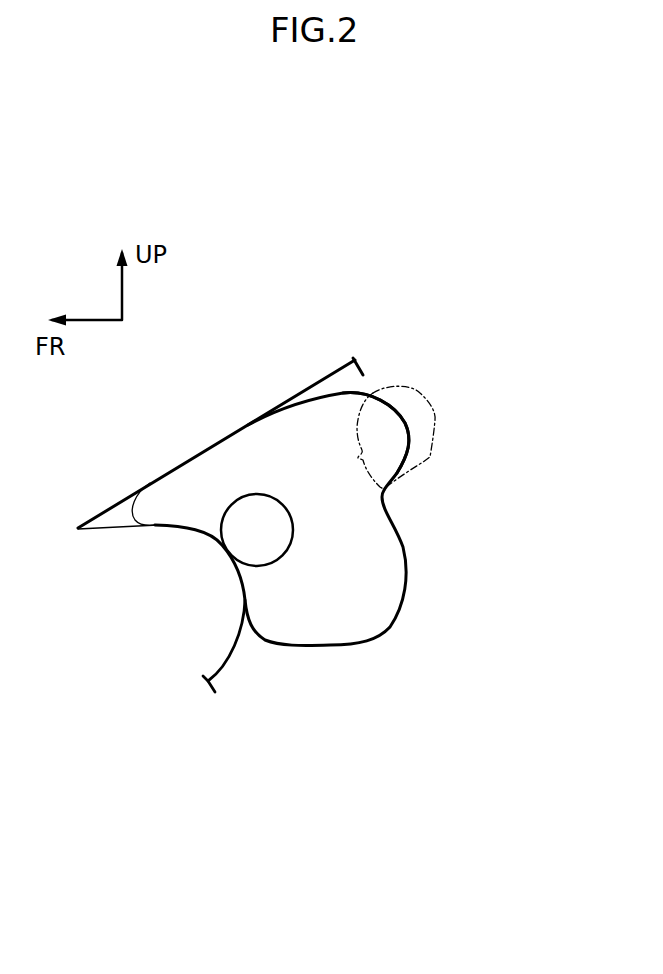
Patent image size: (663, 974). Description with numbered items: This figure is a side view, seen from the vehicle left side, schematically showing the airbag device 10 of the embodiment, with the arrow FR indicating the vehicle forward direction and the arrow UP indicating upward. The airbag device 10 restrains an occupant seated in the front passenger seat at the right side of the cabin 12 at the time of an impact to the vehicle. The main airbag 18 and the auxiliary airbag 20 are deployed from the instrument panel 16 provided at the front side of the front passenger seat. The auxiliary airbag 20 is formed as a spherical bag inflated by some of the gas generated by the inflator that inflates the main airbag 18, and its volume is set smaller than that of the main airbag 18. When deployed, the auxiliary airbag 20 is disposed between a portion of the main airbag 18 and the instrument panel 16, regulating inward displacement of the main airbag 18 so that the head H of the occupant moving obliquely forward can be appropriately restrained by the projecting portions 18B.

The airbag device 10 is at (298, 730).
The cabin 12 is at (503, 603).
The instrument panel 16 is at (233, 655).
The main airbag 18 is at (362, 648).
The projecting portions 18B is at (407, 417).
The auxiliary airbag 20 is at (283, 555).
The head H is at (437, 412).